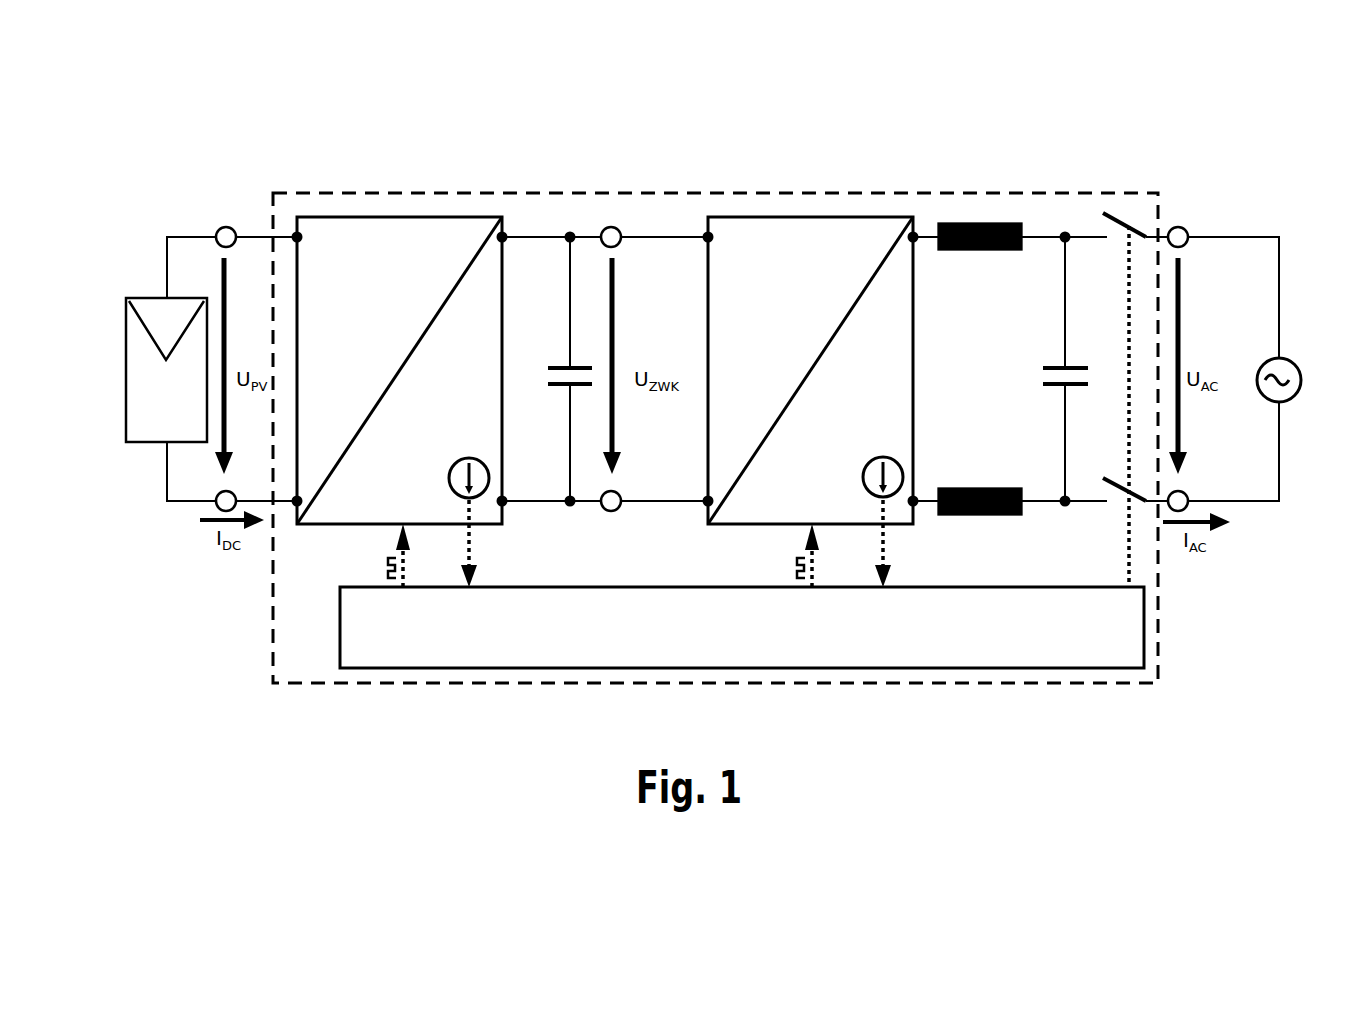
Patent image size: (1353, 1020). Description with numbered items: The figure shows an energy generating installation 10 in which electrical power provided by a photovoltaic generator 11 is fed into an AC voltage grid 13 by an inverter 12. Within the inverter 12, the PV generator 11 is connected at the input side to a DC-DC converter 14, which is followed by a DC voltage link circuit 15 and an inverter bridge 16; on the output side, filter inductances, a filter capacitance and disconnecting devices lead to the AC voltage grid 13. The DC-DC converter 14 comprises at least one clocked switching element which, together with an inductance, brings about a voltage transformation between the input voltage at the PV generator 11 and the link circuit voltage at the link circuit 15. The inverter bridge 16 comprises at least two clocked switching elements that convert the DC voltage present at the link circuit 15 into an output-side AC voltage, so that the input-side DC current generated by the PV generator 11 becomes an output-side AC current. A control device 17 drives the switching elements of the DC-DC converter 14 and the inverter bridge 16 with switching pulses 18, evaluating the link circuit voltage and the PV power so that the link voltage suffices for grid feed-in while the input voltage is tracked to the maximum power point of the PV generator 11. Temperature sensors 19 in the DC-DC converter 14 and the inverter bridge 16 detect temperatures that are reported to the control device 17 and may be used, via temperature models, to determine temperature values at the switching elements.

The energy generating installation 10 is at (196, 144).
The photovoltaic generator 11 is at (123, 380).
The inverter 12 is at (305, 193).
The AC voltage grid 13 is at (1297, 370).
The DC-DC converter 14 is at (403, 217).
The DC voltage link circuit 15 is at (551, 318).
The inverter bridge 16 is at (790, 217).
The control device 17 is at (340, 630).
The switching pulses 18 is at (368, 563).
The temperature sensors 19 is at (478, 496).